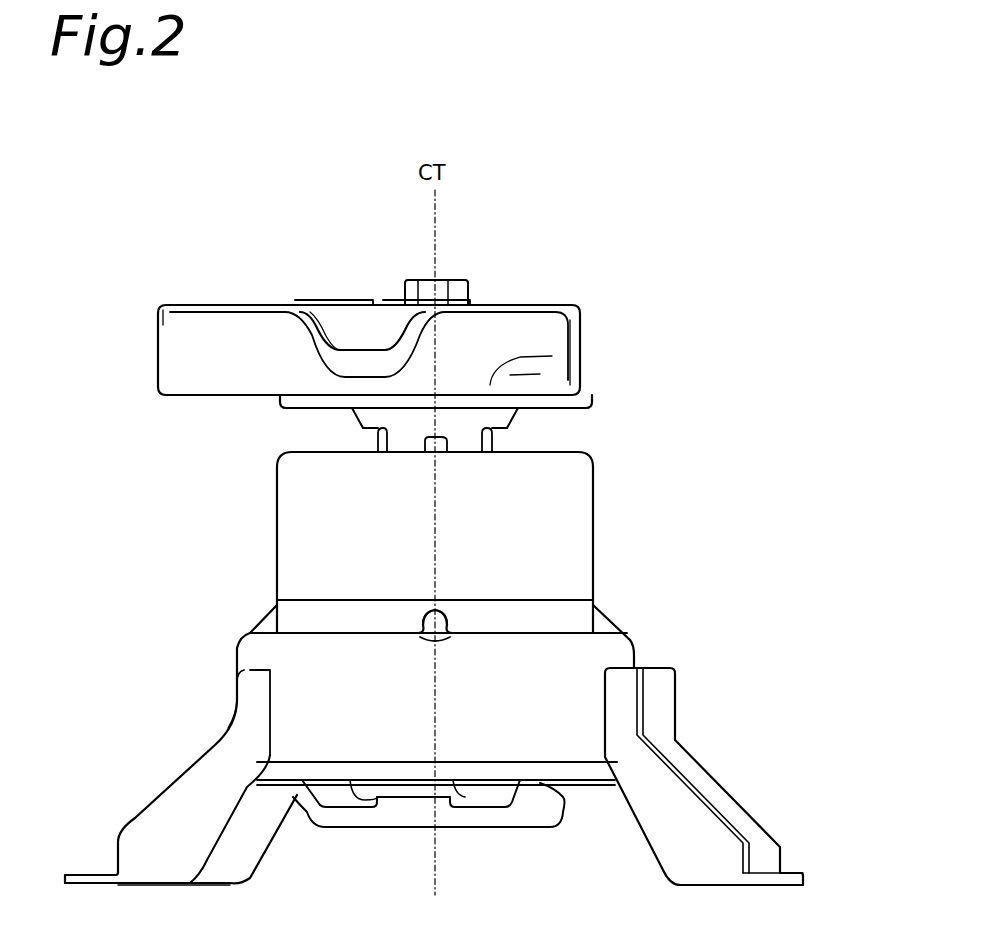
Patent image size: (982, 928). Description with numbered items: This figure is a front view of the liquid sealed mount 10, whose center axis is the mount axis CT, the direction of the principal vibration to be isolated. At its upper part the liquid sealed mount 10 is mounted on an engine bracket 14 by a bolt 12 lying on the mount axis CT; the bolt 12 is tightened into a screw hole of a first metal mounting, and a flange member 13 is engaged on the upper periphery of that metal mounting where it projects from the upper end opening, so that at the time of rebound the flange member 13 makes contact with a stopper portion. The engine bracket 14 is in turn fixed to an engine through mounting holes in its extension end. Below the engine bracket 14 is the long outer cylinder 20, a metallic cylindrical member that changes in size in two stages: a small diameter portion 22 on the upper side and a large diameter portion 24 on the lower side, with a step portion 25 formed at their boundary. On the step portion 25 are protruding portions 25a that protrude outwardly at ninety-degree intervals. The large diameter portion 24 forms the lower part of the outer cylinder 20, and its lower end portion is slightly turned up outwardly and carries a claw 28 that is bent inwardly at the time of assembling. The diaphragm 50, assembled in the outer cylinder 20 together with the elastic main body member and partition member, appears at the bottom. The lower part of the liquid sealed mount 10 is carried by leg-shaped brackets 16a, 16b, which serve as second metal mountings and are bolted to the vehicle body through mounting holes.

The liquid sealed mount 10 is at (620, 440).
The bolt 12 is at (462, 288).
The flange member 13 is at (360, 410).
The engine bracket 14 is at (200, 305).
The bracket 16a is at (170, 808).
The bracket 16b is at (705, 793).
The outer cylinder 20 is at (587, 497).
The small diameter portion 22 is at (295, 512).
The large diameter portion 24 is at (300, 650).
The step portion 25 is at (566, 612).
The protruding portion 25a is at (442, 615).
The claw 28 is at (347, 800).
The diaphragm 50 is at (550, 810).